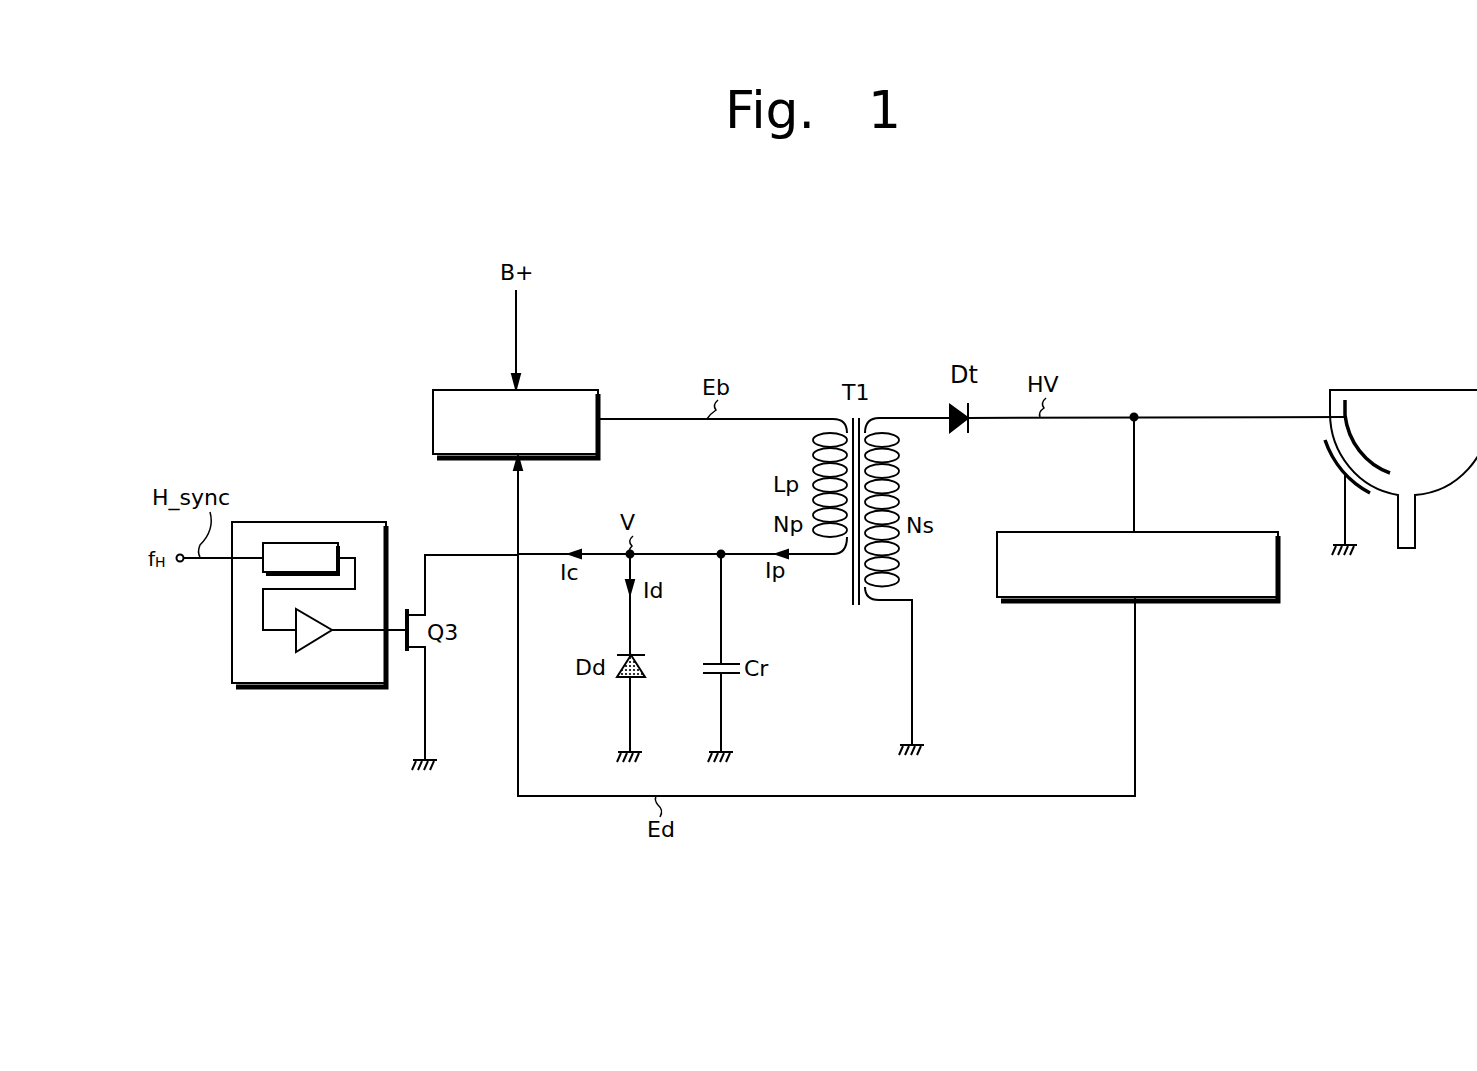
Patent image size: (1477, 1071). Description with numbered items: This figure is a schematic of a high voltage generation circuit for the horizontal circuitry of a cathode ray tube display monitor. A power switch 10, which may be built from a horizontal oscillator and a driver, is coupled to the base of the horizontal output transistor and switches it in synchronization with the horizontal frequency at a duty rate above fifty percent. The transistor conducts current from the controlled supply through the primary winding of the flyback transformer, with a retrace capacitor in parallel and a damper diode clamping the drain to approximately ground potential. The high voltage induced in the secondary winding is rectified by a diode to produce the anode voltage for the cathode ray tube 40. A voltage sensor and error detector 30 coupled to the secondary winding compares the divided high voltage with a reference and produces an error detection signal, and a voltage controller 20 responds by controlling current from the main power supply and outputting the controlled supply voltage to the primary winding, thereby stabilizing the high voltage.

The power switch 10 is at (378, 521).
The voltage controller 20 is at (553, 390).
The voltage sensor and error detector 30 is at (1228, 532).
The cathode ray tube 40 is at (1420, 390).